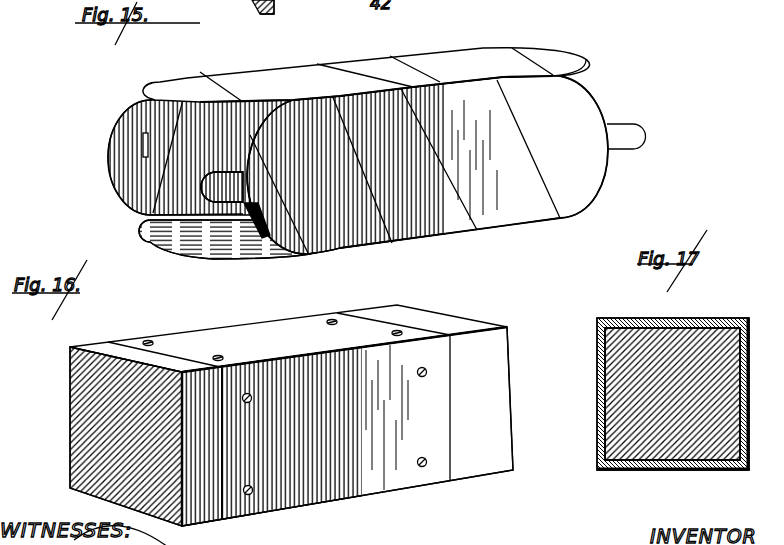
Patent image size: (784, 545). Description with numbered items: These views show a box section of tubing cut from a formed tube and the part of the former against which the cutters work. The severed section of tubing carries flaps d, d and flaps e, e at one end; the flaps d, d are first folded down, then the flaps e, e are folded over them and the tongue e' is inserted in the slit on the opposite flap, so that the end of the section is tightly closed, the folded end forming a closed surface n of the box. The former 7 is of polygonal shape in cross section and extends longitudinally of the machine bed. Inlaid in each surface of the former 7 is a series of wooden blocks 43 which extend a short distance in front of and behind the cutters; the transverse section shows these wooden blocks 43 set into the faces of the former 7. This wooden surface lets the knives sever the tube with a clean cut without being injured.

In FIG. 15, the flap d is at (160, 88).
In FIG. 15, the flap e is at (181, 197).
In FIG. 15, the tongue e' is at (392, 175).
In FIG. 15, the cylindrical body n is at (426, 164).
In FIG. 16, the tube former 7 is at (66, 432).
In FIG. 17, the tube former 7 is at (688, 448).
In FIG. 16, the wooden blocks 43 is at (303, 325).
In FIG. 17, the wooden blocks 43 is at (620, 313).